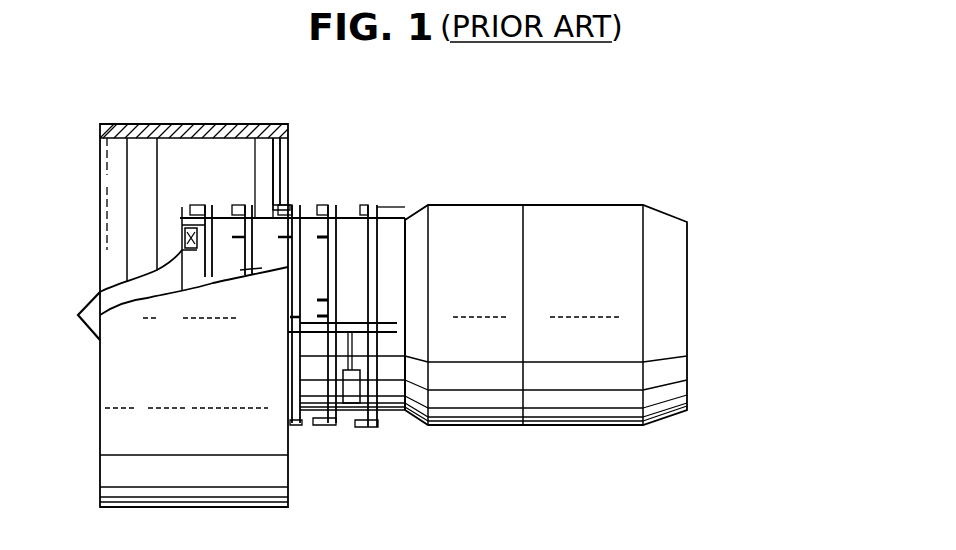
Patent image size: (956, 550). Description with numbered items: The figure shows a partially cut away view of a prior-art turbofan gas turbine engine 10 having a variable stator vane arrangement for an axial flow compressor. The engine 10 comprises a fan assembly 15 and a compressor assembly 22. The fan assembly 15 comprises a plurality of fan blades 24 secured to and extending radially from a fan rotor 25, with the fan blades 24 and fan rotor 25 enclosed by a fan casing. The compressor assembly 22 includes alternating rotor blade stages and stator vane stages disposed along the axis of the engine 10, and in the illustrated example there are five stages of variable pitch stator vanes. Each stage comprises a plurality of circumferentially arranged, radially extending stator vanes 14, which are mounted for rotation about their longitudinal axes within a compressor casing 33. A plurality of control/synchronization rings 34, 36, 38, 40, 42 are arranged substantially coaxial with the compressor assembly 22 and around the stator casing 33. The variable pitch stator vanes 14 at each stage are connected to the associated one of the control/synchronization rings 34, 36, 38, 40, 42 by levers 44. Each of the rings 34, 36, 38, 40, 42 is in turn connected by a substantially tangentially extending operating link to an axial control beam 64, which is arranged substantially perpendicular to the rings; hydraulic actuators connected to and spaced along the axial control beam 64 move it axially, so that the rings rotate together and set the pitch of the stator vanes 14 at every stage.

The turbofan gas turbine engine 10 is at (378, 132).
The stator vanes 14 is at (190, 250).
The fan assembly 15 is at (198, 477).
The compressor assembly 22 is at (340, 217).
The fan blades 24 is at (133, 158).
The fan rotor 25 is at (137, 280).
The compressor casing 33 is at (196, 248).
The control/synchronization ring 34 is at (207, 218).
The control/synchronization ring 36 is at (250, 256).
The control/synchronization ring 38 is at (294, 423).
The control/synchronization ring 40 is at (335, 420).
The control/synchronization ring 42 is at (320, 298).
The levers 44 is at (244, 204).
The axial control beam 64 is at (395, 328).